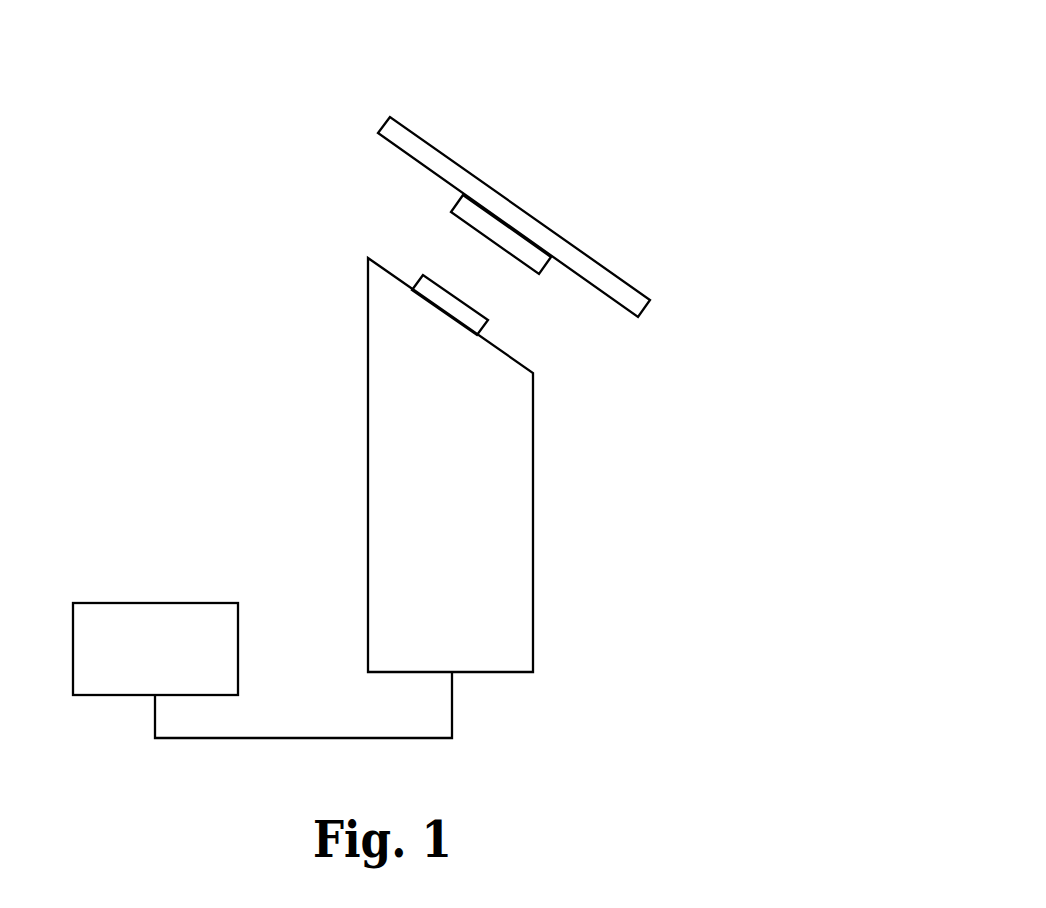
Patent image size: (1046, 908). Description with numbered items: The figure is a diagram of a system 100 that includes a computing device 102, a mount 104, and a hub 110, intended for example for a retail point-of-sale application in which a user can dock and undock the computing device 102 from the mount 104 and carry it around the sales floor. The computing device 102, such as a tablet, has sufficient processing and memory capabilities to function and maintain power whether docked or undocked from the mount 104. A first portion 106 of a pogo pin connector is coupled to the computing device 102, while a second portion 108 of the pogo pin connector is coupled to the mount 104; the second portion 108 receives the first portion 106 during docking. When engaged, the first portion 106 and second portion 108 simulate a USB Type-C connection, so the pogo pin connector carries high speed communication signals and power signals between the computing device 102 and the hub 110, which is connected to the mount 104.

The system 100 is at (617, 107).
The computing device 102 is at (645, 312).
The mount 104 is at (533, 558).
The first portion of pogo pin connector 106 is at (547, 262).
The second portion of pogo pin connector 108 is at (423, 273).
The hub 110 is at (240, 652).